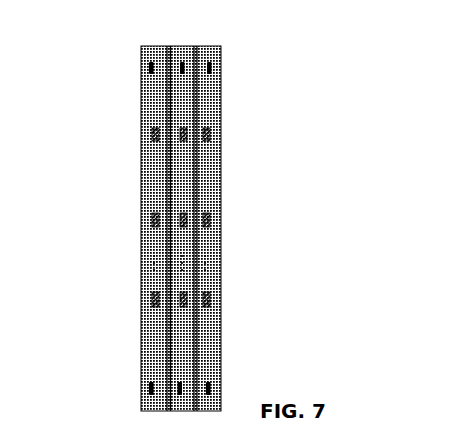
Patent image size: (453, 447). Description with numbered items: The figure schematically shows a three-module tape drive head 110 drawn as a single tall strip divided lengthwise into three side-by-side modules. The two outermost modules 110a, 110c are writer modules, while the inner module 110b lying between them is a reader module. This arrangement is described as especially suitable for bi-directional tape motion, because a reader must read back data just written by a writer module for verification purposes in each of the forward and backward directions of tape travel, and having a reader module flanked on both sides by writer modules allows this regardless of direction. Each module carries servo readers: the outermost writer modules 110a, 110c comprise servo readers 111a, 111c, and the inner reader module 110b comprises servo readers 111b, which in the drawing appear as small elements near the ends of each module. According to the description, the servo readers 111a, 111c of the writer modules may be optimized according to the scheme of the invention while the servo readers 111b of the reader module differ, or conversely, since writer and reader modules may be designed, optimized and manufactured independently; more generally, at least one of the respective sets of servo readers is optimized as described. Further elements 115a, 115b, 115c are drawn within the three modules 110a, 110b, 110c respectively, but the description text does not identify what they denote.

The three-module head 110 is at (234, 211).
The outermost writer module 110a is at (147, 43).
The inner reader module 110b is at (183, 46).
The outermost writer module 110c is at (222, 48).
The servo readers 111a is at (149, 68).
The servo readers 111b is at (184, 68).
The servo readers 111c is at (210, 65).
The first electrode element 115a is at (155, 134).
The second electrode element 115b is at (184, 137).
The third electrode element 115c is at (207, 138).